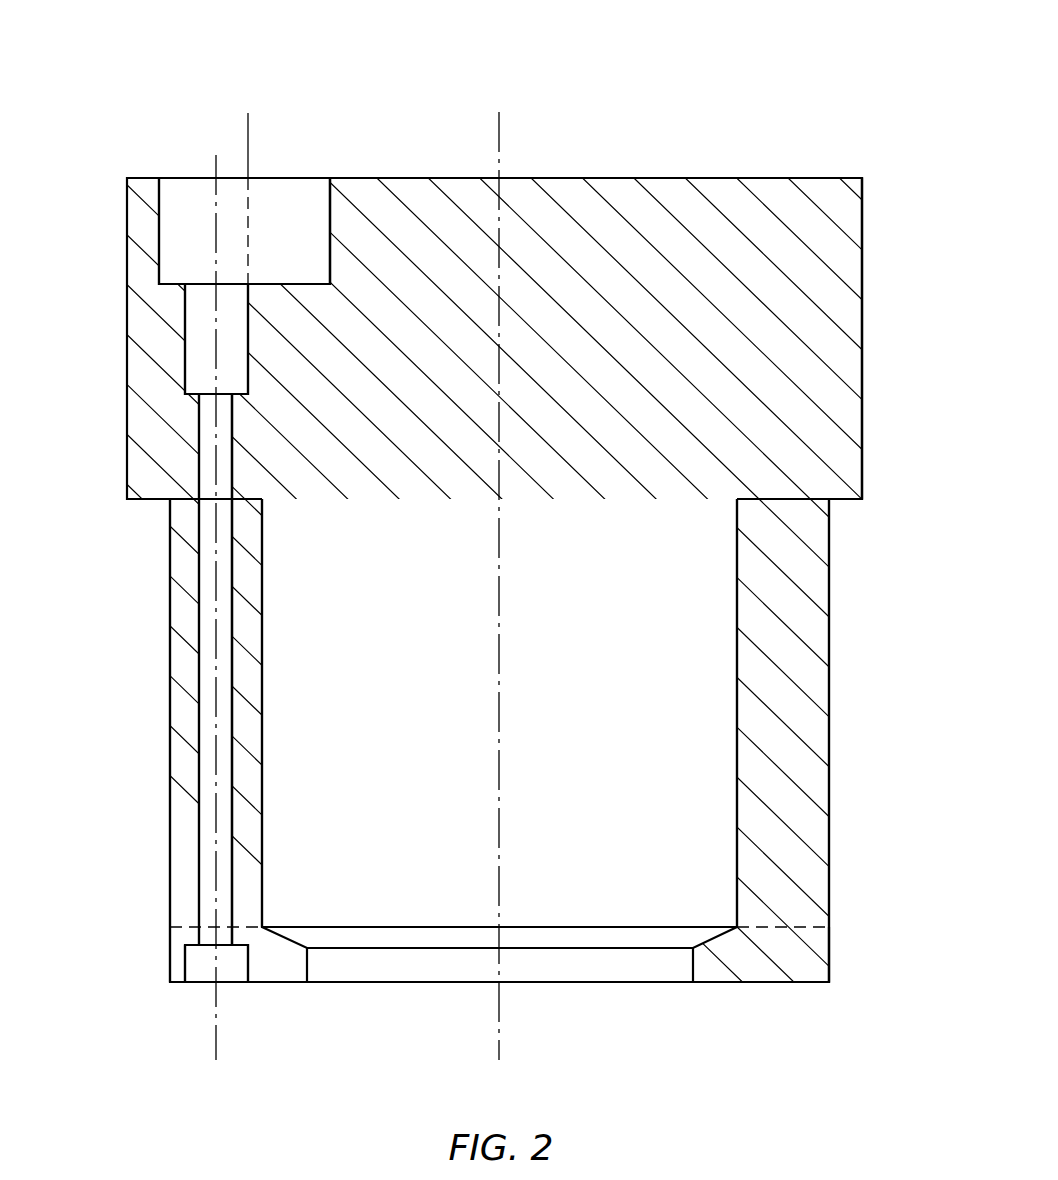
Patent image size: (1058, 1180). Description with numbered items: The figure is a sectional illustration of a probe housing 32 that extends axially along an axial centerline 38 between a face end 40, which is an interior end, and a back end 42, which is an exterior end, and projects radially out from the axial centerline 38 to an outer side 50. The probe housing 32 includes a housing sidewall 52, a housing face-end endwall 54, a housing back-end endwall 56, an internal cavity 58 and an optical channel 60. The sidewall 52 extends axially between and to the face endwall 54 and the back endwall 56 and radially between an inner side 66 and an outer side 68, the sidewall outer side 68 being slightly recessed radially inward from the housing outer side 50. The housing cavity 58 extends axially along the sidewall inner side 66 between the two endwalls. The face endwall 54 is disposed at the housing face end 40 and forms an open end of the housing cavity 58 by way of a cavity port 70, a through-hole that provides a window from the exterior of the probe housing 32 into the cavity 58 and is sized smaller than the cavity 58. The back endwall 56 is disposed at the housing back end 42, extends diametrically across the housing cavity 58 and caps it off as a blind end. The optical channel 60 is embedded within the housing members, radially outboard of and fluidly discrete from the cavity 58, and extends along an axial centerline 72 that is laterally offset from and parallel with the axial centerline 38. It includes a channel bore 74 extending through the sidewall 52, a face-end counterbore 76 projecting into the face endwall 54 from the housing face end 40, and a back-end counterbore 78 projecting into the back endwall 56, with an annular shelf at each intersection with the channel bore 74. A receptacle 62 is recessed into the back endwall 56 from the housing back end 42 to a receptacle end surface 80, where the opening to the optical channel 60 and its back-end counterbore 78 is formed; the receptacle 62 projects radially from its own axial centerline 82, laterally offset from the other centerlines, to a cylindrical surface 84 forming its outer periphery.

The probe housing 32 is at (862, 78).
The axial centerline 38 is at (505, 117).
The face end 40 is at (790, 982).
The back end 42 is at (795, 178).
The outer side 50 is at (863, 396).
The housing sidewall 52 is at (839, 679).
The housing face-end endwall 54 is at (841, 962).
The housing back-end endwall 56 is at (866, 290).
The internal cavity 58 is at (590, 694).
The optical channel 60 is at (196, 468).
The receptacle 62 is at (297, 210).
The inner side 66 is at (262, 679).
The outer side 68 is at (170, 677).
The cavity port 70 is at (370, 968).
The axial centerline 72 is at (214, 1055).
The channel bore 74 is at (233, 607).
The face-end counterbore 76 is at (250, 969).
The back-end counterbore 78 is at (248, 348).
The receptacle end surface 80 is at (295, 283).
The axial centerline 82 is at (248, 114).
The surface 84 is at (330, 198).